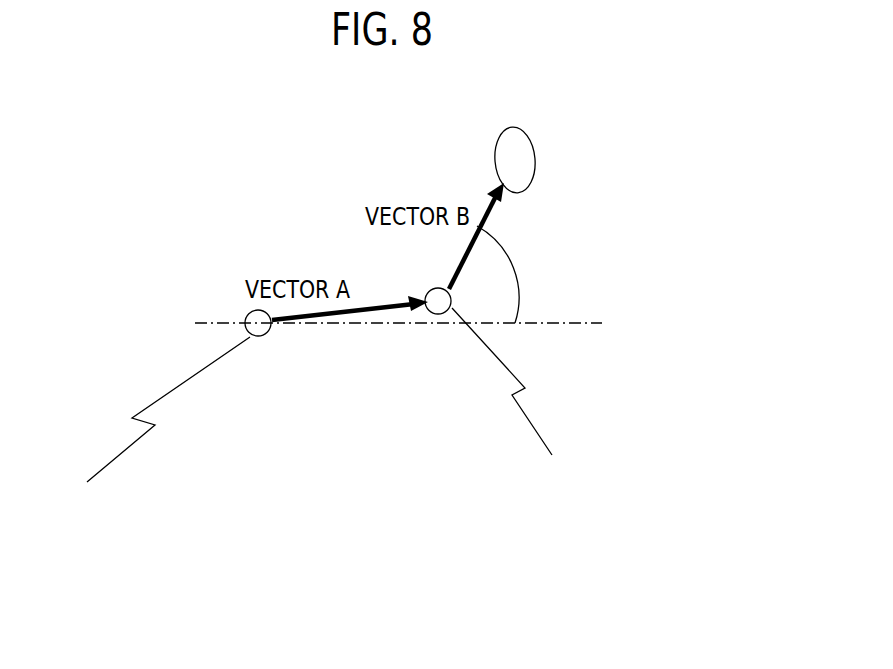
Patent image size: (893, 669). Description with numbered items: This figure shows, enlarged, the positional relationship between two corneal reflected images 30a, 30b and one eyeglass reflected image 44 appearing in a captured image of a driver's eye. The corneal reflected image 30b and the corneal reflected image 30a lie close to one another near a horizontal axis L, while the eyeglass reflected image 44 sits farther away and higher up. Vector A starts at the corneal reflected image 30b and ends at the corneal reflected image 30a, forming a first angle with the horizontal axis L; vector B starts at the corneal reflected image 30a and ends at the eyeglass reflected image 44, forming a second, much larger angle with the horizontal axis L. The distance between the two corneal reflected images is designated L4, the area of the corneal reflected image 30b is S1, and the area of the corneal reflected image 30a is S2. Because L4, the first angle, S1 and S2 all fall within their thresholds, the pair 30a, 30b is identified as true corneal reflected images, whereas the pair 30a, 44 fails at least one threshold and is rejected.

The eyeglass reflected image 44 is at (527, 168).
The corneal reflected image 30a is at (522, 396).
The corneal reflected image 30b is at (146, 420).
The horizontal axis L is at (202, 323).
The distance between the corneal reflected images L4 is at (429, 308).
The area of corneal reflected image 30b S1 is at (257, 344).
The area of corneal reflected image 30a S2 is at (444, 322).